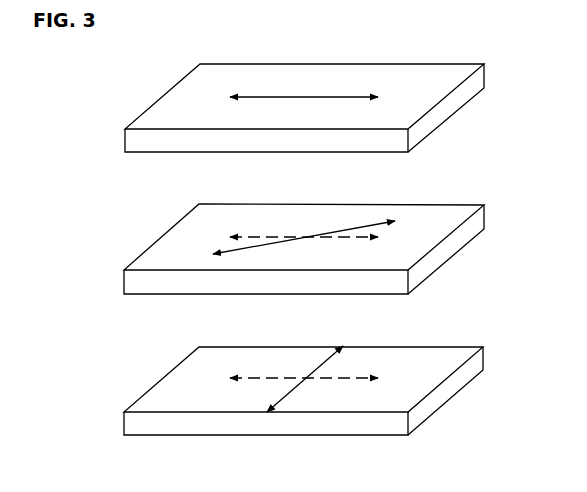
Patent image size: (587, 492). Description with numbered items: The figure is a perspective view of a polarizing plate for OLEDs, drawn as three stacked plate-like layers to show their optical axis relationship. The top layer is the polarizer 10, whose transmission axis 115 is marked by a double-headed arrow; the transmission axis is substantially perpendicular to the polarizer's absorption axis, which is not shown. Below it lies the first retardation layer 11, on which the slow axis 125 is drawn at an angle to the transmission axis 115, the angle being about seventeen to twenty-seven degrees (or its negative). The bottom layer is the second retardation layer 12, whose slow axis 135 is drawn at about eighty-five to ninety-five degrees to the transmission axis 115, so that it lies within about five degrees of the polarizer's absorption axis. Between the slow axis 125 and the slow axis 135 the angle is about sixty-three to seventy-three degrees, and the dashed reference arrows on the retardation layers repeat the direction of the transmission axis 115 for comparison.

The polarizer 10 is at (459, 97).
The first retardation layer 11 is at (459, 239).
The second retardation layer 12 is at (460, 378).
The transmission axis 115 is at (320, 97).
The slow axis 125 is at (270, 243).
The slow axis 135 is at (292, 389).